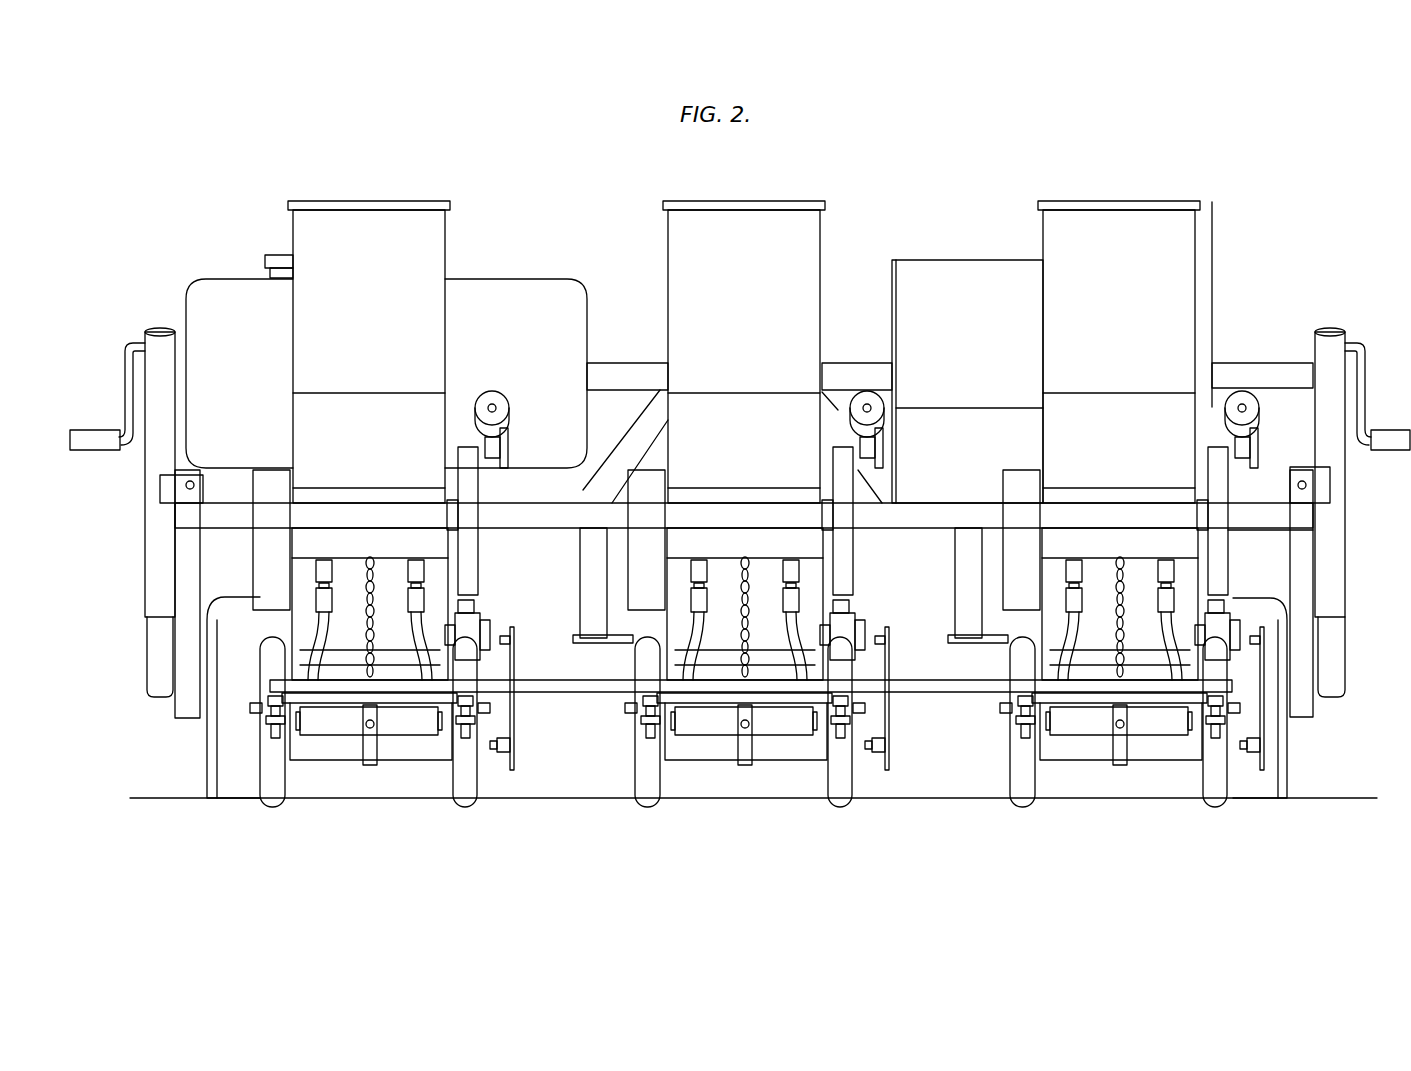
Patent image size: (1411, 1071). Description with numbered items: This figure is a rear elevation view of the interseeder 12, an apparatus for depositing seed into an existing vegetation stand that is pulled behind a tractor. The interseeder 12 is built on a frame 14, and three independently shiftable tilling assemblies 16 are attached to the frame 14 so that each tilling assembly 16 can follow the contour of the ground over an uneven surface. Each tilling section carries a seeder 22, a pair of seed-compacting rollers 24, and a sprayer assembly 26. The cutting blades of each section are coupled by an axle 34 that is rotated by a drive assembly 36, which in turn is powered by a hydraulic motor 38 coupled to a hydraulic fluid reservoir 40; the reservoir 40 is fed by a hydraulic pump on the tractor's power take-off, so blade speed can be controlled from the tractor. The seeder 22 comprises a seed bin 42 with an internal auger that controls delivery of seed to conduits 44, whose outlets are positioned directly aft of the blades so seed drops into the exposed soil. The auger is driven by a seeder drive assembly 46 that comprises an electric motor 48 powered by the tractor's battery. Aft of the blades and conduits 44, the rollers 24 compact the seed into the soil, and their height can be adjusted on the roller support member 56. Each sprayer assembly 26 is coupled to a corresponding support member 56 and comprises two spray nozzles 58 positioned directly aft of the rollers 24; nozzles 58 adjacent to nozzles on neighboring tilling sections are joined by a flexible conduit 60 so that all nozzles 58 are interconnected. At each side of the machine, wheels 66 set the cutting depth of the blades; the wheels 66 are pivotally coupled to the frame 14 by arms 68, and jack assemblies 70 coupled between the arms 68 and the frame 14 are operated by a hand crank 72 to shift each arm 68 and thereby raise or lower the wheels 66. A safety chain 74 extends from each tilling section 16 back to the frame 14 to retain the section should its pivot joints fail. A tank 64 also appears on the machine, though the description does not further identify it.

The interseeder 12 is at (268, 135).
The frame 14 is at (1278, 365).
The tilling assembly 16 is at (335, 790).
The seeder 22 is at (437, 190).
The seed-compacting rollers 24 is at (270, 800).
The sprayer assembly 26 is at (268, 680).
The axle 34 is at (505, 748).
The drive assembly 36 is at (514, 640).
The hydraulic motor 38 is at (470, 613).
The hydraulic fluid reservoir 40 is at (982, 275).
The seed bin 42 is at (432, 245).
The conduits 44 is at (408, 625).
The seeder drive assembly 46 is at (490, 490).
The electric motor 48 is at (492, 405).
The roller support member 56 is at (380, 722).
The spray nozzles 58 is at (275, 740).
The flexible conduit 60 is at (560, 685).
The tank 64 is at (233, 292).
The wheels 66 is at (215, 775).
The arms 68 is at (188, 655).
The jack assembly 70 is at (150, 505).
The hand crank 72 is at (130, 405).
The safety chain 74 is at (372, 600).